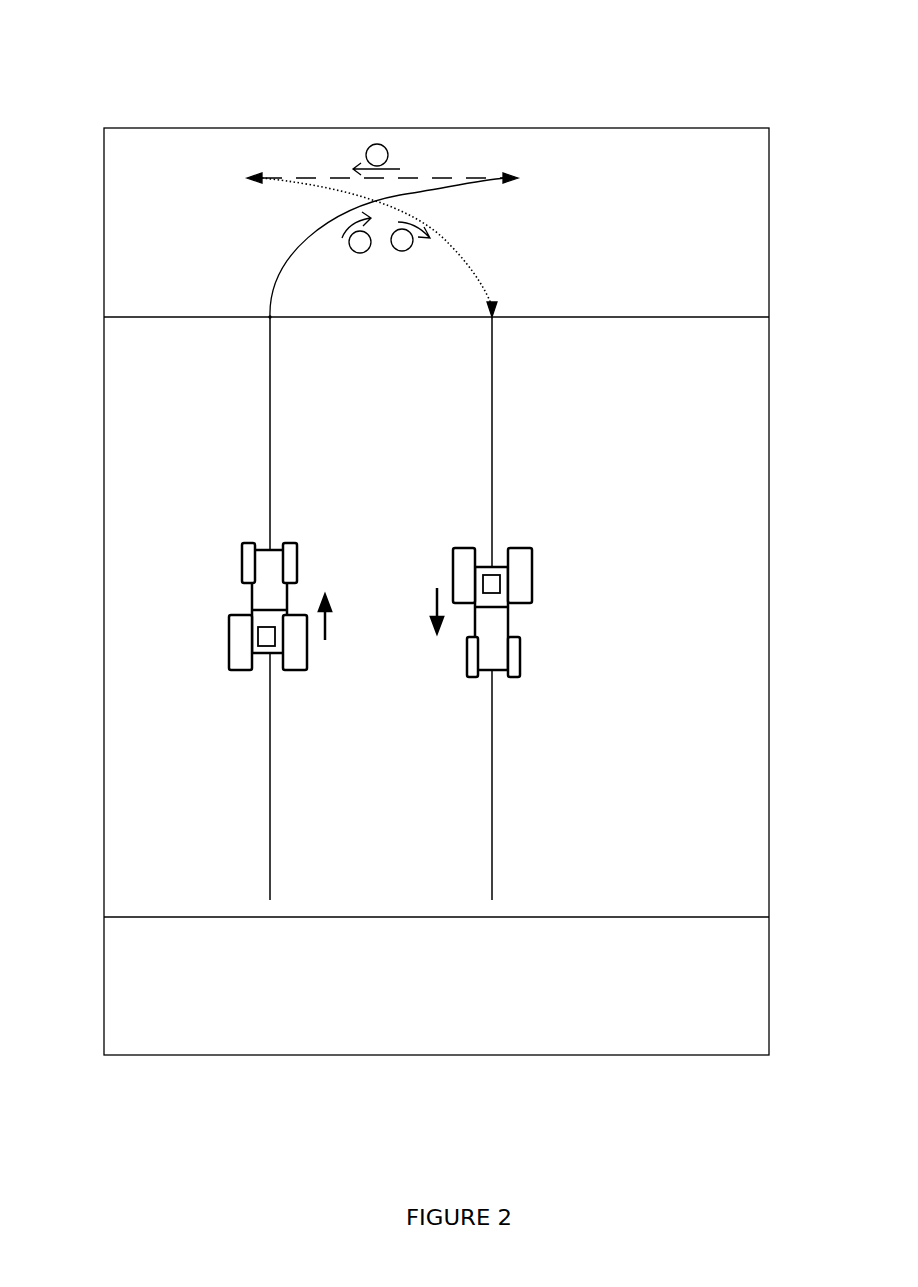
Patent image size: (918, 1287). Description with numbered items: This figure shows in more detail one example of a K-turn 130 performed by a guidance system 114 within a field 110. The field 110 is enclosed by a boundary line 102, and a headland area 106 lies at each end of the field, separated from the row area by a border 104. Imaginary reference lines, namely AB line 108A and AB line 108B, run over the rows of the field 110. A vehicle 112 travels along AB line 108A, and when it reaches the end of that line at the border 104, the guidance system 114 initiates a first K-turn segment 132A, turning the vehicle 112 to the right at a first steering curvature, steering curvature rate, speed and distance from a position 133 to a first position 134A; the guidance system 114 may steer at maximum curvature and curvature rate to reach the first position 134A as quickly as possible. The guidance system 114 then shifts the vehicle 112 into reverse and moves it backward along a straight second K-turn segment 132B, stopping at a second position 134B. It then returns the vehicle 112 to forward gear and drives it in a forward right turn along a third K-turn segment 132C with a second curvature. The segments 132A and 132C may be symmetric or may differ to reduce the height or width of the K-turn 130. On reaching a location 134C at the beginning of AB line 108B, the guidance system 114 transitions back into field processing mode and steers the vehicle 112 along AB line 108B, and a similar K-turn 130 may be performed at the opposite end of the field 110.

The boundary line 102 is at (323, 1055).
The border 104 is at (575, 320).
The headland area 106 is at (742, 280).
The AB line 108A is at (268, 484).
The AB line 108B is at (493, 485).
The field 110 is at (735, 835).
The vehicle 112 is at (250, 600).
The guidance system 114 is at (265, 648).
The K-turn 130 is at (338, 89).
The first K-turn segment 132A is at (425, 188).
The second K-turn segment 132B is at (428, 176).
The third K-turn segment 132C is at (348, 190).
The position 133 is at (270, 322).
The first position 134A is at (517, 175).
The second position 134B is at (246, 176).
The location 134C is at (497, 317).